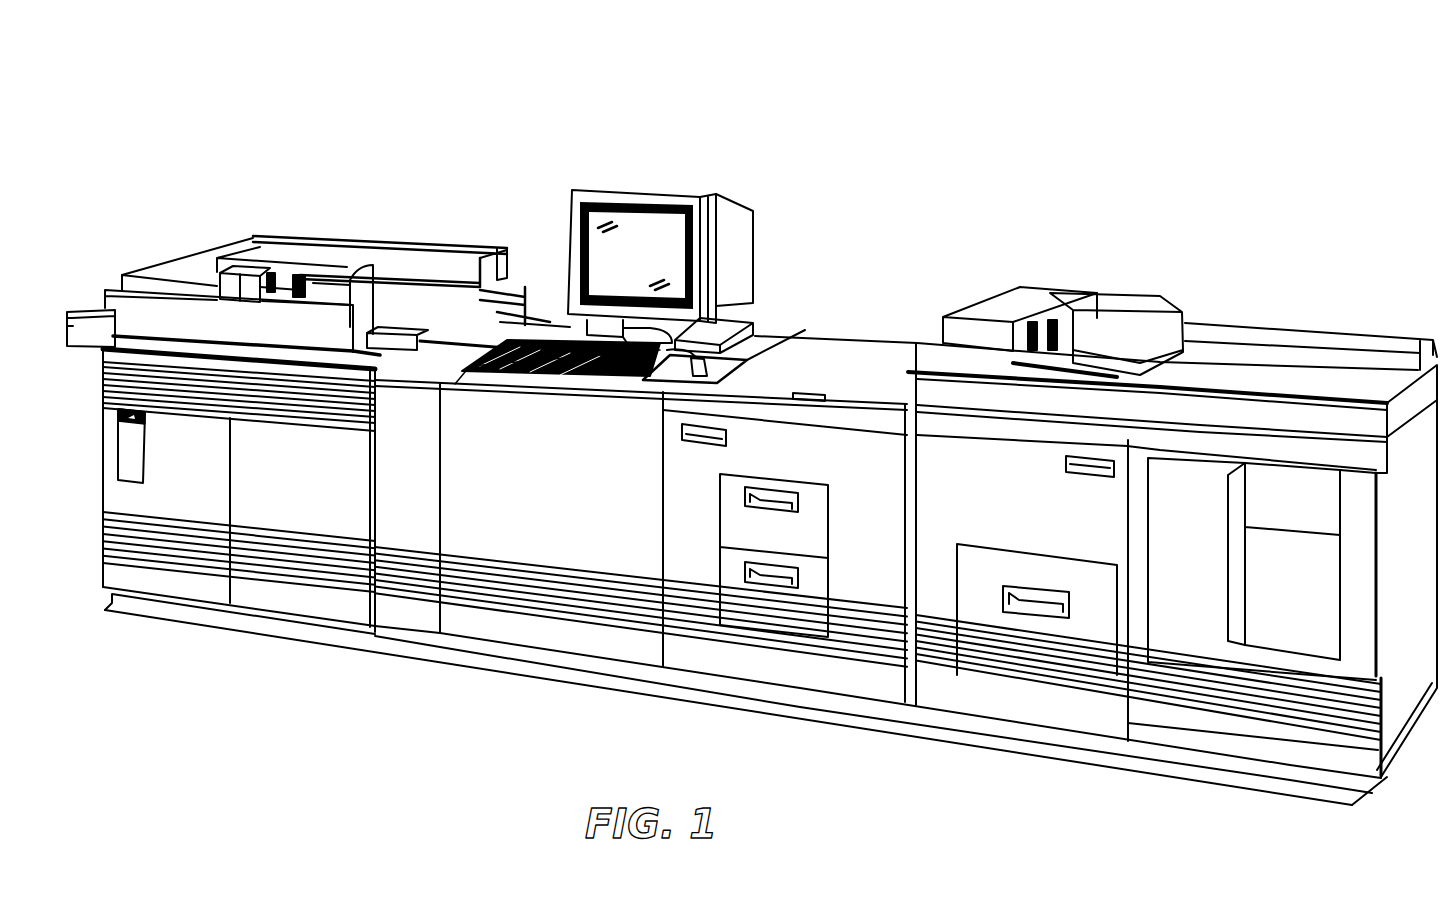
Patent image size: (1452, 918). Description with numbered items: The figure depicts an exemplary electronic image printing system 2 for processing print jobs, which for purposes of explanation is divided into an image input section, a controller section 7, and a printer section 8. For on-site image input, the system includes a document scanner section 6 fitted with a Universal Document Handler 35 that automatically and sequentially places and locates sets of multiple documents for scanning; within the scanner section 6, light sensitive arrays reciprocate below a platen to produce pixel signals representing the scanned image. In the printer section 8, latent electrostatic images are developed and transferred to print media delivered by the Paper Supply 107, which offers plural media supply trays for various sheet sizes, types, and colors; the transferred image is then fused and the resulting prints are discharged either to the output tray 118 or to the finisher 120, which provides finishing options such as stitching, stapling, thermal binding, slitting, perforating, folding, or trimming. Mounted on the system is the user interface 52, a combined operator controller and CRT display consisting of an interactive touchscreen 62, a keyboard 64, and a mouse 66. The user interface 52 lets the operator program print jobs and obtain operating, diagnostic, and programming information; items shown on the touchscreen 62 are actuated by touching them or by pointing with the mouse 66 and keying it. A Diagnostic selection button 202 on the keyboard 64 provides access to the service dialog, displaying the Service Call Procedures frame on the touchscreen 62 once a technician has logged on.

The image printing system 2 is at (899, 66).
The document scanner section 6 is at (356, 206).
The controller section 7 is at (92, 490).
The printer section 8 is at (873, 257).
The Universal Document Handler 35 is at (223, 263).
The user interface 52 is at (664, 171).
The interactive touchscreen 62 is at (598, 263).
The keyboard 64 is at (548, 383).
The mouse 66 is at (660, 383).
The Diagnostic selection button 202 is at (495, 380).
The Paper Supply 107 is at (830, 565).
The output tray 118 is at (1113, 307).
The finisher 120 is at (1228, 728).